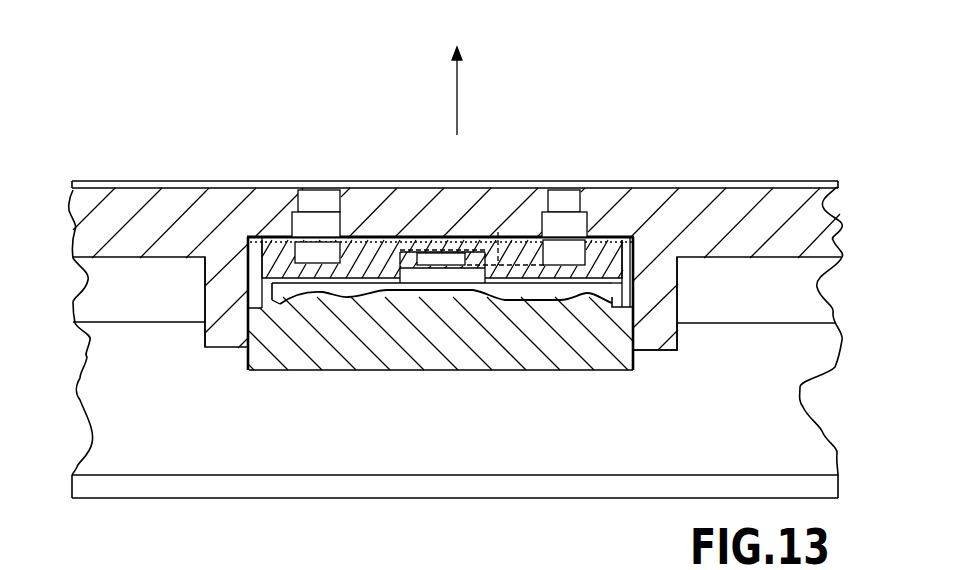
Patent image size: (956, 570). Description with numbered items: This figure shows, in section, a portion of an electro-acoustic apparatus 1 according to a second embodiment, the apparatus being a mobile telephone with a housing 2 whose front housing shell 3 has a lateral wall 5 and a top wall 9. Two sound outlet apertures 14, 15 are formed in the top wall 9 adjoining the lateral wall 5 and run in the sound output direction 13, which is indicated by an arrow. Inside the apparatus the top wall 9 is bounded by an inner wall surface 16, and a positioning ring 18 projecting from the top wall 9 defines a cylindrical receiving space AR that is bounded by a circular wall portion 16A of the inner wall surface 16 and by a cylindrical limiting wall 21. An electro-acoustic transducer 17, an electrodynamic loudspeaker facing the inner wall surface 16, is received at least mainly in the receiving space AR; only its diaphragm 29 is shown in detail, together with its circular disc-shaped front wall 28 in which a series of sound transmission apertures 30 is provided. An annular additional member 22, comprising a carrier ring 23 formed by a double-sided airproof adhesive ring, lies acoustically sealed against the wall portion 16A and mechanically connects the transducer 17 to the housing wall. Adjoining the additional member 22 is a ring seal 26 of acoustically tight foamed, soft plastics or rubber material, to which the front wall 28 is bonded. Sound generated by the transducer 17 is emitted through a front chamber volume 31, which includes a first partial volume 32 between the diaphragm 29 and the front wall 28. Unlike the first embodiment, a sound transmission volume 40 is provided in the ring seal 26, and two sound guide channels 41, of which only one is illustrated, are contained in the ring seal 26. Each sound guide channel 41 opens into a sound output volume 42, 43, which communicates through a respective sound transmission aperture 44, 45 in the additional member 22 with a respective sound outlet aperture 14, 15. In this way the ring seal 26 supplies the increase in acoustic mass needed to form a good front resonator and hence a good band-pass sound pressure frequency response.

The electro-acoustic apparatus 1 is at (727, 154).
The housing 2 is at (360, 504).
The front housing shell 3 is at (118, 182).
The lateral wall 5 is at (818, 337).
The top wall 9 is at (777, 196).
The sound output direction 13 is at (457, 112).
The sound outlet aperture 14 is at (555, 258).
The sound outlet aperture 15 is at (325, 190).
The inner wall surface 16 is at (118, 259).
The circular wall portion 16A is at (604, 237).
The electro-acoustic transducer 17 is at (564, 375).
The positioning ring 18 is at (657, 320).
The cylindrical limiting wall 21 is at (622, 293).
The annular additional member 22 is at (356, 237).
The carrier ring 23 is at (616, 240).
The ring seal 26 is at (270, 256).
The front wall 28 is at (380, 290).
The diaphragm 29 is at (517, 295).
The sound transmission apertures 30 is at (463, 290).
The front chamber volume 31 is at (290, 290).
The first partial volume 32 is at (349, 293).
The sound transmission volume 40 is at (414, 288).
The sound guide channel 41 is at (437, 258).
The sound output volume 42 is at (497, 247).
The sound output volume 43 is at (284, 240).
The sound transmission aperture 44 is at (552, 250).
The sound transmission aperture 45 is at (308, 190).
The receiving space AR is at (627, 298).